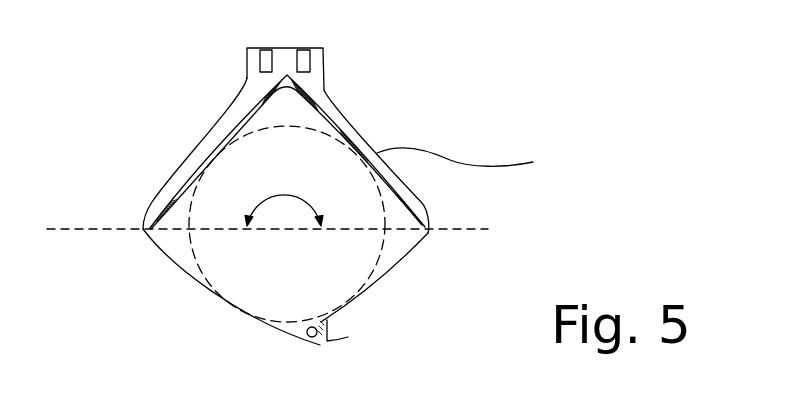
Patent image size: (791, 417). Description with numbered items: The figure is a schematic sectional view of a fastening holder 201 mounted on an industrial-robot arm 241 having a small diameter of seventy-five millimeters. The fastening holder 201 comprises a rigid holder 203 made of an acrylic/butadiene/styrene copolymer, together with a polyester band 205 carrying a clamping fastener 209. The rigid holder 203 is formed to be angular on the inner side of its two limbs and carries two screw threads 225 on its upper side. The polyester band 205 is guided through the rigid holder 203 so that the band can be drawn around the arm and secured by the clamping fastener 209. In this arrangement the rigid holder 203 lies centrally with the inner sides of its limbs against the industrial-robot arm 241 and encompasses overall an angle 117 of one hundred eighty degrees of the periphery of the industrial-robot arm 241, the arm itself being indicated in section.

The fastening holder 201 is at (329, 185).
The rigid holder 203 is at (322, 95).
The polyester band 205 is at (481, 164).
The screw threads 225 is at (310, 56).
The industrial-robot arm 241 is at (362, 247).
The angle 117 is at (284, 194).
The clamping fastener 209 is at (318, 345).